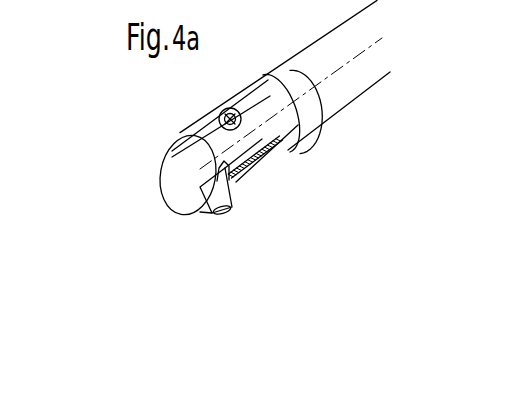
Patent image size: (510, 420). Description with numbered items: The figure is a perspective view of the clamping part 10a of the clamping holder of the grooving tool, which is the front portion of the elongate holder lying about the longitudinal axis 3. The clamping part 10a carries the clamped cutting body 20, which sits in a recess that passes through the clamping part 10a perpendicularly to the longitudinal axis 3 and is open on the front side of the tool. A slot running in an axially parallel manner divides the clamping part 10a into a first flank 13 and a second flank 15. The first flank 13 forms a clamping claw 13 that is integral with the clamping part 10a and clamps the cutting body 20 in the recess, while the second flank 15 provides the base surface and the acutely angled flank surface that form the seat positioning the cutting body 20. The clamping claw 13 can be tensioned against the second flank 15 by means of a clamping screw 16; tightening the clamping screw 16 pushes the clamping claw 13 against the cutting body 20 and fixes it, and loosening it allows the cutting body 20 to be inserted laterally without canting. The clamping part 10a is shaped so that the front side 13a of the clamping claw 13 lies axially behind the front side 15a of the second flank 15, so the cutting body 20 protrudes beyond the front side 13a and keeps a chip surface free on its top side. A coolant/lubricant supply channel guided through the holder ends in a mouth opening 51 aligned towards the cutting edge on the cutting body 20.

The longitudinal axis 3 is at (323, 84).
The clamping part 10a is at (181, 111).
The first flank (clamping claw) 13 is at (275, 132).
The front side of the first flank 13a is at (142, 178).
The second flank 15 is at (302, 180).
The front side of the second flank 15a is at (173, 234).
The clamping screw 16 is at (226, 77).
The cutting body 20 is at (231, 221).
The mouth opening 51 is at (257, 190).